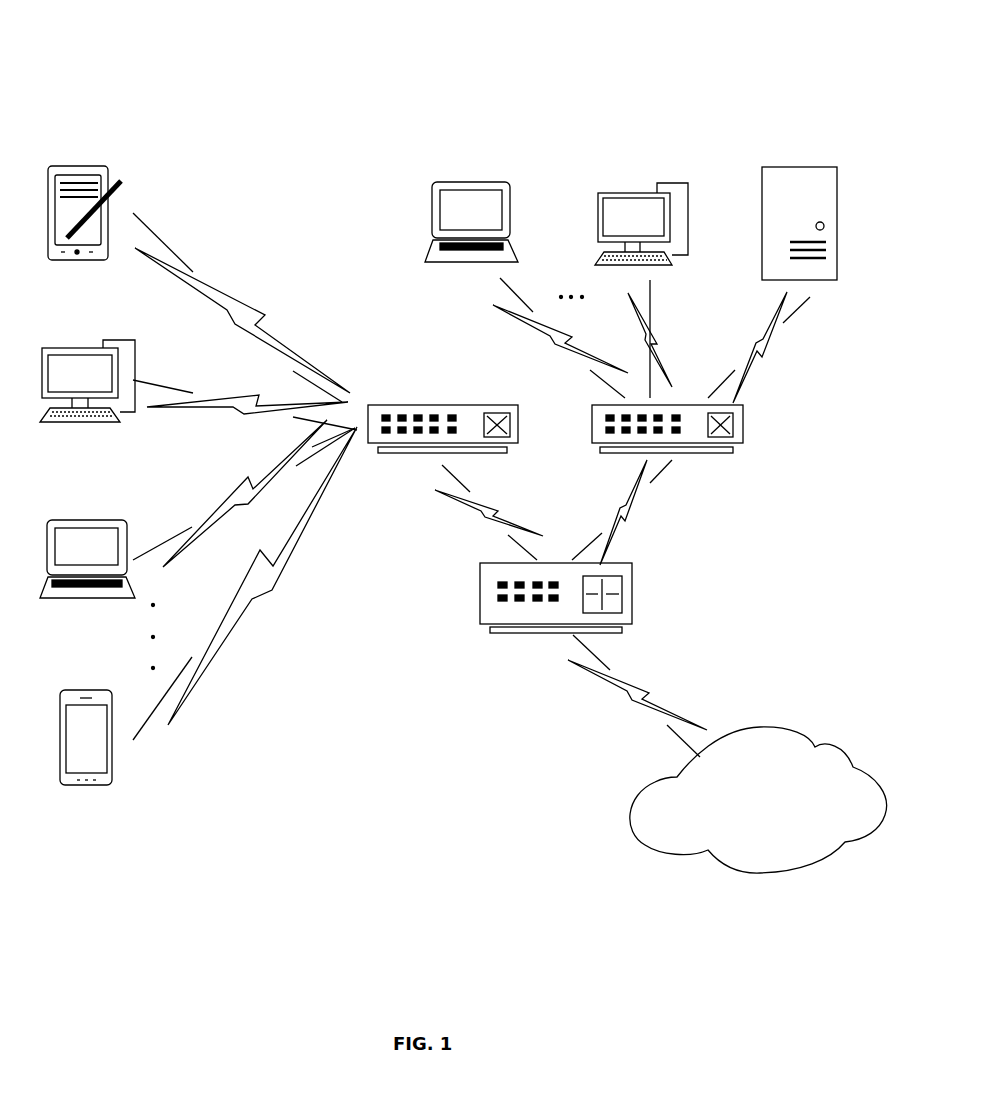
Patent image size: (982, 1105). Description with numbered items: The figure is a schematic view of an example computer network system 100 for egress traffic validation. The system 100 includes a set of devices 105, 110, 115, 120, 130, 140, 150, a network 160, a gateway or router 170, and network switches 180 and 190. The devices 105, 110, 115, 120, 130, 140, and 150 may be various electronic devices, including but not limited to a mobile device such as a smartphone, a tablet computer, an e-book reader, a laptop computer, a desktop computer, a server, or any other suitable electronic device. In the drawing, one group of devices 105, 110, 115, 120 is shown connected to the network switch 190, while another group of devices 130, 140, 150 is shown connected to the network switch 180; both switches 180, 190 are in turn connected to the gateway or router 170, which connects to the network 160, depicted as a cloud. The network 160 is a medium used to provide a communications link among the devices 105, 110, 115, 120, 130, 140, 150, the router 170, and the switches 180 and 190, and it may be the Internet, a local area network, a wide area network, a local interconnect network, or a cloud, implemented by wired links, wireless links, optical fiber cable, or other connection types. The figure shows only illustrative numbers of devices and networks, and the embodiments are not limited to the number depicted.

The computer network system 100 is at (433, 86).
The device 105 is at (103, 160).
The device 110 is at (78, 343).
The device 115 is at (88, 516).
The device 120 is at (78, 676).
The device 130 is at (475, 178).
The device 140 is at (622, 183).
The device 150 is at (786, 157).
The network 160 is at (772, 720).
The gateway or router 170 is at (473, 623).
The network switch 180 is at (751, 443).
The network switch 190 is at (405, 400).